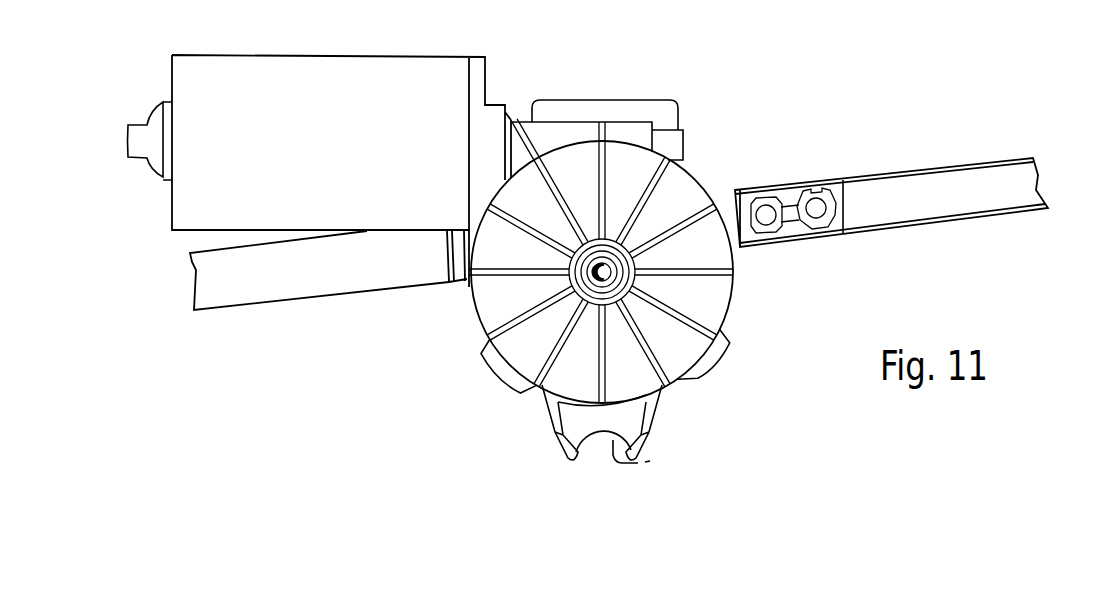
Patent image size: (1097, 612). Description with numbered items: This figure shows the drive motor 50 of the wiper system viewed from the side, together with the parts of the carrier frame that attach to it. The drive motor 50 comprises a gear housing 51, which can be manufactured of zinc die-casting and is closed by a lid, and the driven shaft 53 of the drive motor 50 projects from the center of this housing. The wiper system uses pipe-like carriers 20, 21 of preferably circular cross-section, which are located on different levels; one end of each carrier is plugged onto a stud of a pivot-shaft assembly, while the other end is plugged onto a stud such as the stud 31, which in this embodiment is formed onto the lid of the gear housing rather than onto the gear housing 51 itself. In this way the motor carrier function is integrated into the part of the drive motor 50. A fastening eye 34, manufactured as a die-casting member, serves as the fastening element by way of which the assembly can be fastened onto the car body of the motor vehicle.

The drive motor 50 is at (332, 138).
The pipe-like carrier 20 is at (291, 288).
The pipe-like carrier 21 is at (920, 185).
The stud 31 is at (806, 188).
The gear housing 51 is at (683, 190).
The driven shaft 53 is at (490, 366).
The fastening eye 34 is at (656, 461).